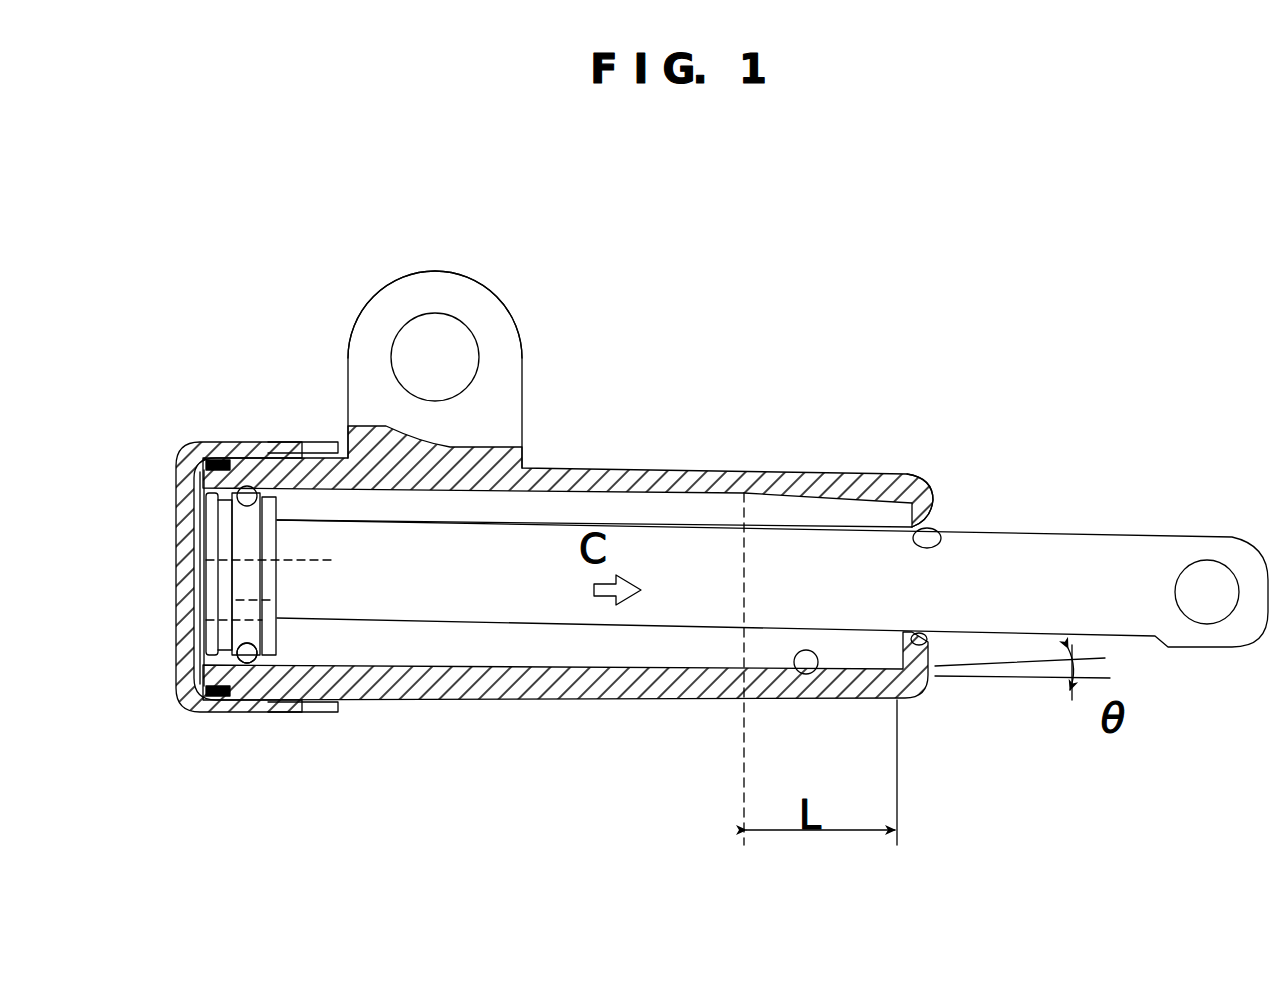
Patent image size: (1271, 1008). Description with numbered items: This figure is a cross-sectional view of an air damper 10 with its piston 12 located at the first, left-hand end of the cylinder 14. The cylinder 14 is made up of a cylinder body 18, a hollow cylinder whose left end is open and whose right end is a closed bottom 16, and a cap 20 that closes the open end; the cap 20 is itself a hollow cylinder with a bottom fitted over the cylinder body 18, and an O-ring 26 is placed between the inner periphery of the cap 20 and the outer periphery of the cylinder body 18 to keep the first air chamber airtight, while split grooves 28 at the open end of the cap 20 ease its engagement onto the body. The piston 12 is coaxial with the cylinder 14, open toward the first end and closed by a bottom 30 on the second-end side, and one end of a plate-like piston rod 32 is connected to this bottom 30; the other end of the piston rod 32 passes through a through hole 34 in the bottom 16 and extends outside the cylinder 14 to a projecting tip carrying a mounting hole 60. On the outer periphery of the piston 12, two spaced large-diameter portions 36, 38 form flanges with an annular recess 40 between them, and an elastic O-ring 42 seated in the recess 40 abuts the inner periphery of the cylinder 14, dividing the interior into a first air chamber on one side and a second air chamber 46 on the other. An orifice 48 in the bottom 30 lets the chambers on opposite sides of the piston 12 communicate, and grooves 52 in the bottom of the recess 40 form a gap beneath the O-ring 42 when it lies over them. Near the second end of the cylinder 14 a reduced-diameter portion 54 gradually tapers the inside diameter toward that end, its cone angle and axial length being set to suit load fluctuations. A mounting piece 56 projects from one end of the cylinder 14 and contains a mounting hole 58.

The air damper 10 is at (808, 400).
The piston 12 is at (282, 636).
The cylinder 14 is at (704, 335).
The bottom 16 is at (930, 522).
The cylinder body 18 is at (688, 468).
The cap 20 is at (168, 506).
The O-ring 26 is at (214, 708).
The split grooves 28 is at (300, 442).
The bottom 30 is at (278, 612).
The piston rod 32 is at (983, 612).
The through hole 34 is at (930, 545).
The large-diameter portion 36 is at (200, 566).
The large-diameter portion 38 is at (277, 543).
The annular recess 40 is at (198, 640).
The O-ring 42 is at (250, 662).
The second air chamber 46 is at (542, 648).
The orifice 48 is at (294, 574).
The grooves 52 is at (206, 560).
The reduced-diameter portion 54 is at (806, 672).
The mounting piece 56 is at (358, 306).
The mounting hole 58 is at (436, 317).
The mounting hole 60 is at (1212, 575).